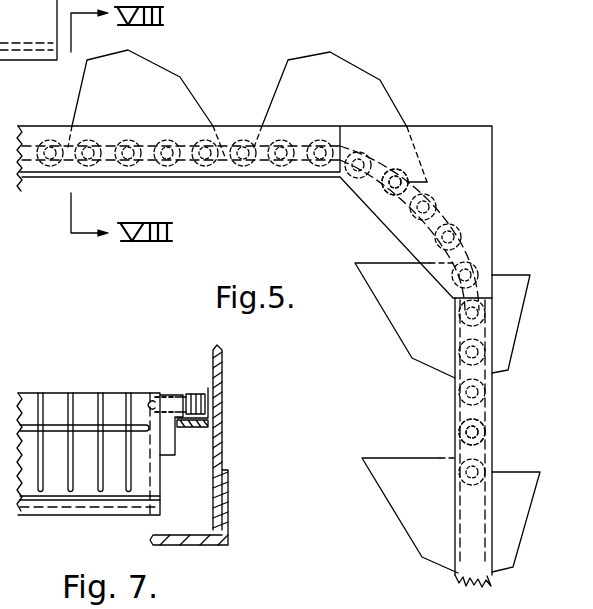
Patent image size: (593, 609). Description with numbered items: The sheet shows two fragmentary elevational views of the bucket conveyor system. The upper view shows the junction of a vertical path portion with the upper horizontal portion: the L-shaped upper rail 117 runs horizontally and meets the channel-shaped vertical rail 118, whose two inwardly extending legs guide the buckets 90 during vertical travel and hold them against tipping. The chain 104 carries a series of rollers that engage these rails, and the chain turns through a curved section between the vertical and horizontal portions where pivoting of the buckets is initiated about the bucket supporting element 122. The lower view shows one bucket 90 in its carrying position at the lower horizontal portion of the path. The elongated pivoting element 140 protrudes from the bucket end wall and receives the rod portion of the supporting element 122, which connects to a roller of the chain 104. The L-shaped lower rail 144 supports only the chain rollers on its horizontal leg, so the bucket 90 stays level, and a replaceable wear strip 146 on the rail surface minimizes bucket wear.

In FIG. 5, the bucket 90 is at (390, 98).
In FIG. 7, the bucket 90 is at (45, 386).
In FIG. 5, the chain 104 is at (395, 193).
In FIG. 7, the chain 104 is at (194, 382).
In FIG. 5, the rail 117 is at (192, 172).
In FIG. 5, the vertical rail 118 is at (455, 417).
In FIG. 5, the first bucket supporting element 122 is at (477, 447).
In FIG. 7, the first bucket supporting element 122 is at (170, 393).
In FIG. 7, the pivoting element 140 is at (167, 443).
In FIG. 7, the rail 144 is at (200, 428).
In FIG. 7, the replaceable wear strip 146 is at (204, 422).